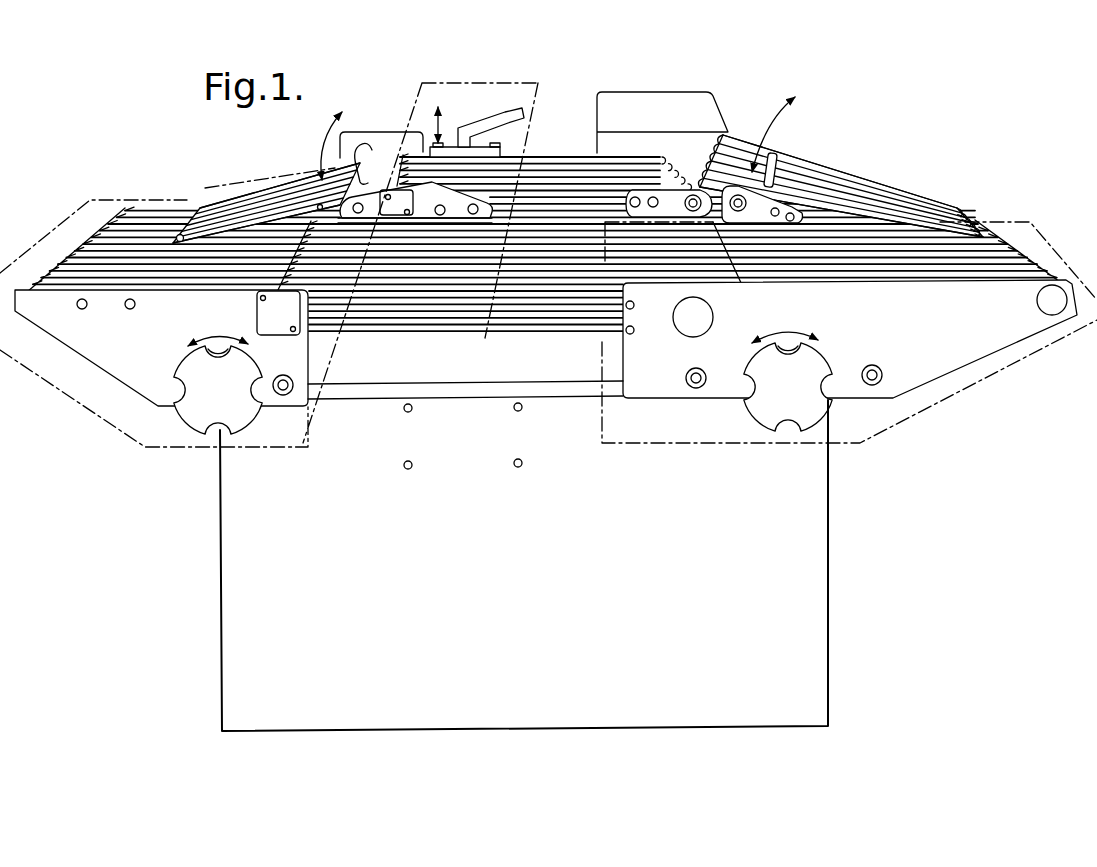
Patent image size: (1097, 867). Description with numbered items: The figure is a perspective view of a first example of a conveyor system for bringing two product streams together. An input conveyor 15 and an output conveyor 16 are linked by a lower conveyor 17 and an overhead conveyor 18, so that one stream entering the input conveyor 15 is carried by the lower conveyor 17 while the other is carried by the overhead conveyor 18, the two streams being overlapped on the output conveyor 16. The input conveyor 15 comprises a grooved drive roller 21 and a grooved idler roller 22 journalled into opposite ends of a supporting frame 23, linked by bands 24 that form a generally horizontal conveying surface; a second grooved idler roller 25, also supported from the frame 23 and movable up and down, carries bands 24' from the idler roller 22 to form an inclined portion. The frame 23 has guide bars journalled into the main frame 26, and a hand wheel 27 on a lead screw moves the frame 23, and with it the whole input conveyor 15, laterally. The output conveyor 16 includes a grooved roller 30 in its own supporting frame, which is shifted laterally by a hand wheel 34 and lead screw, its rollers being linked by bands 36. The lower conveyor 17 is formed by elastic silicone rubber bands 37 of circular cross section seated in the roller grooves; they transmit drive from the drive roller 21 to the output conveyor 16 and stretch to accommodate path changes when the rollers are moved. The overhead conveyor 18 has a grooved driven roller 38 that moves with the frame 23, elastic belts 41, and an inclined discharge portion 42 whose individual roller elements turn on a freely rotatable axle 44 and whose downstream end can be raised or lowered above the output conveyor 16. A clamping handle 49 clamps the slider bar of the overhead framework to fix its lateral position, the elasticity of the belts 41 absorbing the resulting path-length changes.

The input conveyor 15 is at (938, 412).
The output conveyor 16 is at (146, 450).
The lower conveyor 17 is at (460, 277).
The overhead conveyor 18 is at (598, 146).
The grooved drive roller 21 is at (688, 330).
The grooved idler roller 22 is at (1053, 315).
The supporting frame 23 is at (982, 315).
The bands 24 is at (977, 271).
The bands 24' is at (935, 185).
The second grooved idler roller 25 is at (760, 168).
The main frame 26 is at (812, 563).
The hand wheel 27 is at (797, 402).
The grooved roller 30 is at (96, 242).
The hand wheel 34 is at (214, 412).
The bands 36 is at (177, 284).
The bands 37 is at (533, 277).
The grooved driven roller 38 is at (677, 165).
The elastic belts 41 is at (567, 173).
The inclined discharge portion 42 is at (277, 192).
The freely rotatable axle 44 is at (178, 235).
The clamping handle 49 is at (502, 112).